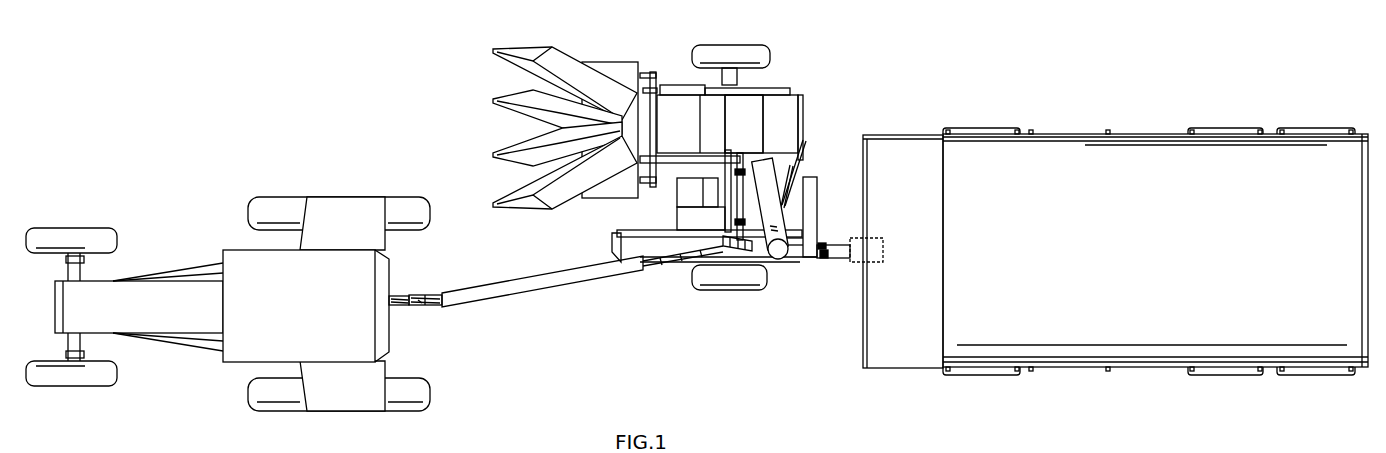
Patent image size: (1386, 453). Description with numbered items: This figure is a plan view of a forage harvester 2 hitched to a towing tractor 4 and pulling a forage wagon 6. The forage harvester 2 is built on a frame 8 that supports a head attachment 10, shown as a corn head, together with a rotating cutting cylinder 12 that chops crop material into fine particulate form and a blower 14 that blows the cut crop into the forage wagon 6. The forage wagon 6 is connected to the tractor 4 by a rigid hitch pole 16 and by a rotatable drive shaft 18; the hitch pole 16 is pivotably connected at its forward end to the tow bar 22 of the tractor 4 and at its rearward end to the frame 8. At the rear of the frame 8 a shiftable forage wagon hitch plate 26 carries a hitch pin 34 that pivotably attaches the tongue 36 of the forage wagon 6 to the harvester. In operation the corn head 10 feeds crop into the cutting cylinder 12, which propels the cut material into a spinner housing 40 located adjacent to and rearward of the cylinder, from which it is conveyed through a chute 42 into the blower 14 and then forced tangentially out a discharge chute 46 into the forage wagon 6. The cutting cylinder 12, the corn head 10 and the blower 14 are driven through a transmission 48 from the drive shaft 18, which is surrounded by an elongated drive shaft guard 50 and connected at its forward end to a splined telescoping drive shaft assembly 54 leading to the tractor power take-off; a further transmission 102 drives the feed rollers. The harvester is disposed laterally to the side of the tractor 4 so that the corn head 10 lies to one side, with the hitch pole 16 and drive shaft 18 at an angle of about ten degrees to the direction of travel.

The forage harvester 2 is at (685, 93).
The tractor 4 is at (218, 366).
The forage wagon 6 is at (1140, 133).
The frame 8 is at (618, 233).
The head attachment 10 is at (575, 54).
The rotating cutting cylinder 12 is at (745, 103).
The blower 14 is at (787, 213).
The rigid hitch pole 16 is at (428, 296).
The rotatable drive shaft 18 is at (660, 263).
The tow bar 22 is at (395, 296).
The forage wagon hitch plate 26 is at (823, 244).
The hitch pin 34 is at (824, 259).
The tongue 36 is at (843, 262).
The spinner housing 40 is at (803, 108).
The chute 42 is at (790, 167).
The discharge chute 46 is at (779, 258).
The transmission 48 is at (730, 250).
The elongated drive shaft guard 50 is at (515, 279).
The splined telescoping drive shaft assembly 54 is at (421, 305).
The transmission 102 is at (680, 191).